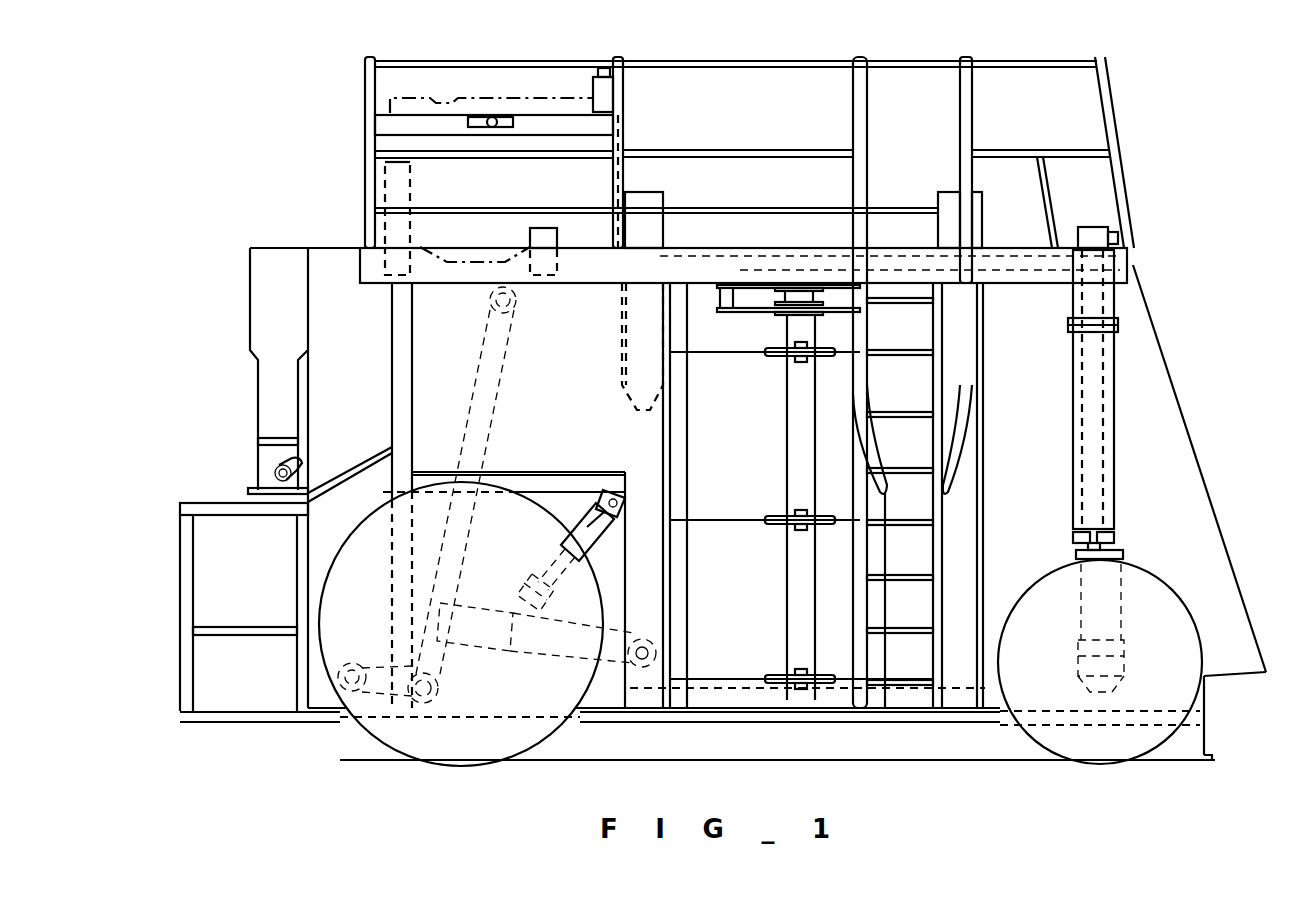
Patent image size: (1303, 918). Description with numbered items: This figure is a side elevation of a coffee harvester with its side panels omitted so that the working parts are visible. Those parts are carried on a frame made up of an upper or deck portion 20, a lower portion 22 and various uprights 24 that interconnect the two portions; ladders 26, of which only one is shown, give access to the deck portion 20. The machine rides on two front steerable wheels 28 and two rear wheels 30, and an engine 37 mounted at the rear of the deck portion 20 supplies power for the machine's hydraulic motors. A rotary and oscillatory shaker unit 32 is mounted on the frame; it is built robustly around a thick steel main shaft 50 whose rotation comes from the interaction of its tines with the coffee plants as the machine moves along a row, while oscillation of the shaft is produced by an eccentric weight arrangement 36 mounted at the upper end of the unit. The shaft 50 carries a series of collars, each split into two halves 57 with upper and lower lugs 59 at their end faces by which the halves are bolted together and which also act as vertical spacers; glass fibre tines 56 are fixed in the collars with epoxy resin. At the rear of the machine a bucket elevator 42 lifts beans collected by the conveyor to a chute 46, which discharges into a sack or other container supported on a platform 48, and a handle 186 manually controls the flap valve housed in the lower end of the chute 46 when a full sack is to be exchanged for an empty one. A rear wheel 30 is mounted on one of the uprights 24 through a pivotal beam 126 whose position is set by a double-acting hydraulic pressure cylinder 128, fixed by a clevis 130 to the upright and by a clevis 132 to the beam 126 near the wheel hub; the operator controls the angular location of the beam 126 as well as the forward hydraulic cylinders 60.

The deck portion 20 is at (360, 263).
The lower portion 22 is at (724, 718).
The uprights 24 is at (403, 334).
The ladders 26 is at (930, 582).
The front steerable wheels 28 is at (1130, 568).
The rear wheels 30 is at (535, 740).
The shaker unit 32 is at (801, 492).
The eccentric weight arrangement 36 is at (762, 315).
The engine 37 is at (392, 98).
The bucket elevator 42 is at (360, 399).
The chute 46 is at (252, 302).
The platform 48 is at (217, 717).
The main shaft 50 is at (787, 427).
The tines 56 is at (717, 355).
The collar halves 57 is at (813, 355).
The lugs 59 is at (806, 510).
The forward hydraulic cylinders 60 is at (1103, 392).
The pivotal beam 126 is at (566, 660).
The double-acting hydraulic pressure cylinder 128 is at (582, 528).
The clevis 130 is at (613, 489).
The clevis 132 is at (515, 600).
The handle 186 is at (284, 471).